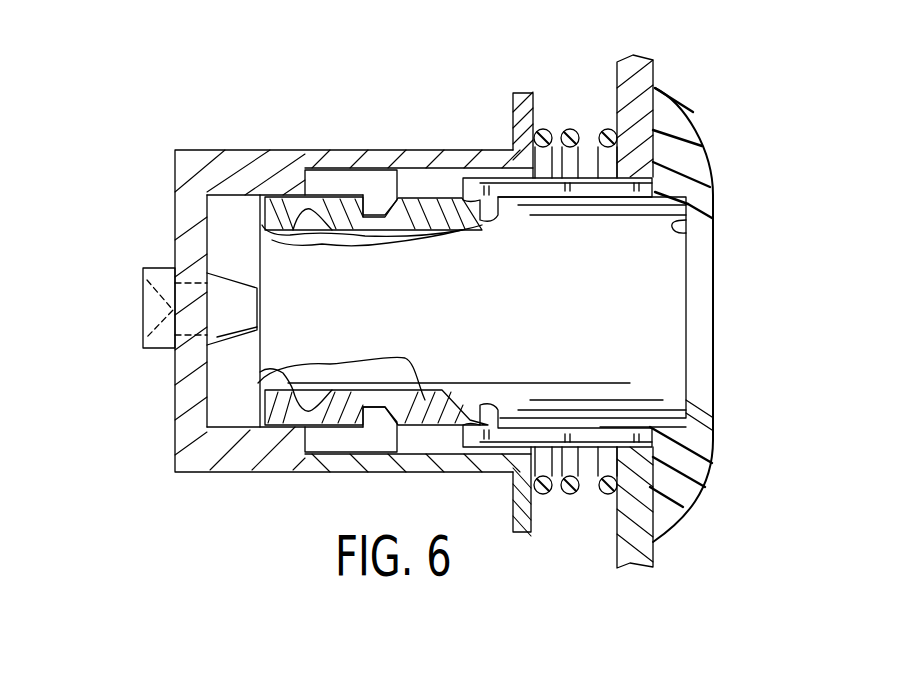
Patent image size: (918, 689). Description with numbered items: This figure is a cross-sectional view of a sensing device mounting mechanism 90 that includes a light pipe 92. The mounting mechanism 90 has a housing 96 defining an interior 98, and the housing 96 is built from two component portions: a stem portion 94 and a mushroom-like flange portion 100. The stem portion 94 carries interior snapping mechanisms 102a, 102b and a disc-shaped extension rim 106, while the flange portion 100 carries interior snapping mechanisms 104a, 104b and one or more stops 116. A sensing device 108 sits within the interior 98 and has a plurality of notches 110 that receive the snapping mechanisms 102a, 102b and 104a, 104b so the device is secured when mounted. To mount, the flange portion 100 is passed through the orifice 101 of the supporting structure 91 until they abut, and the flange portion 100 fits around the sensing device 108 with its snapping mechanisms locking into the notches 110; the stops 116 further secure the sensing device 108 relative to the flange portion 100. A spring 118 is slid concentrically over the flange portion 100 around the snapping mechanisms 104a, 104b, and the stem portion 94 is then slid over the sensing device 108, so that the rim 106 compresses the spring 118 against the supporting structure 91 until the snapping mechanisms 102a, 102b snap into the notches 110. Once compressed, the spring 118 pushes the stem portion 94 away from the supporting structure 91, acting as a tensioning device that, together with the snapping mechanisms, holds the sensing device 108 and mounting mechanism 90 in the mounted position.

The sensing device mounting mechanism 90 is at (253, 113).
The supporting structure 91 is at (655, 71).
The light pipe 92 is at (143, 310).
The stem portion 94 is at (305, 168).
The housing 96 is at (376, 170).
The interior 98 is at (237, 255).
The flange portion 100 is at (692, 128).
The orifice 101 is at (672, 485).
The interior snapping mechanism 102a is at (415, 168).
The interior snapping mechanism 102b is at (395, 452).
The interior snapping mechanism 104a is at (490, 148).
The interior snapping mechanism 104b is at (465, 430).
The disc-shaped extension rim 106 is at (530, 103).
The sensing device 108 is at (492, 342).
The notches 110 is at (285, 237).
The stop 116 is at (686, 233).
The spring 118 is at (572, 163).